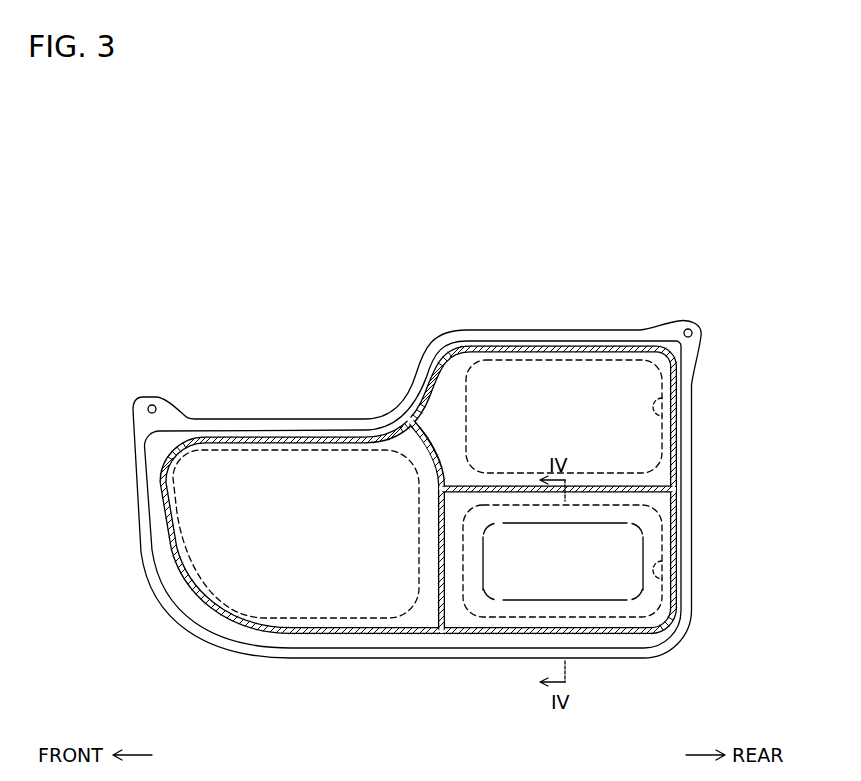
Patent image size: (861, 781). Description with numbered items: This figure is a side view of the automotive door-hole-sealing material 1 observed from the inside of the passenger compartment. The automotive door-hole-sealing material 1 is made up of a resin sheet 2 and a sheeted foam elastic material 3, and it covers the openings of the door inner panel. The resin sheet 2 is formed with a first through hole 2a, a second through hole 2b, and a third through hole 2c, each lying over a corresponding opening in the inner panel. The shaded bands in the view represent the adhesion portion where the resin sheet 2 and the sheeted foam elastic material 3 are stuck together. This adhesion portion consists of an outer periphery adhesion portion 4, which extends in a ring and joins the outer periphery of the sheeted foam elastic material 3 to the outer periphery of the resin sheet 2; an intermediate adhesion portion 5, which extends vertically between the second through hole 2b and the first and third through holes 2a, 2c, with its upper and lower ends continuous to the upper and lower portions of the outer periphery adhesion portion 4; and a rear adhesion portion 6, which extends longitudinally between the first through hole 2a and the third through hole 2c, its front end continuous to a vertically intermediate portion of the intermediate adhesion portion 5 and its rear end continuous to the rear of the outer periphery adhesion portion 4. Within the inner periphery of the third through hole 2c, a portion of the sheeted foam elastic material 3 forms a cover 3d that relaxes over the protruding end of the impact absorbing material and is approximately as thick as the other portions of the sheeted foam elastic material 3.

The automotive door-hole-sealing material 1 is at (226, 389).
The resin sheet 2 is at (433, 340).
The first through hole 2a is at (652, 412).
The second through hole 2b is at (420, 568).
The third through hole 2c is at (652, 575).
The sheeted foam elastic material 3 is at (200, 618).
The cover 3d is at (623, 548).
The outer periphery adhesion portion 4 is at (427, 390).
The intermediate adhesion portion 5 is at (438, 447).
The rear adhesion portion 6 is at (646, 488).